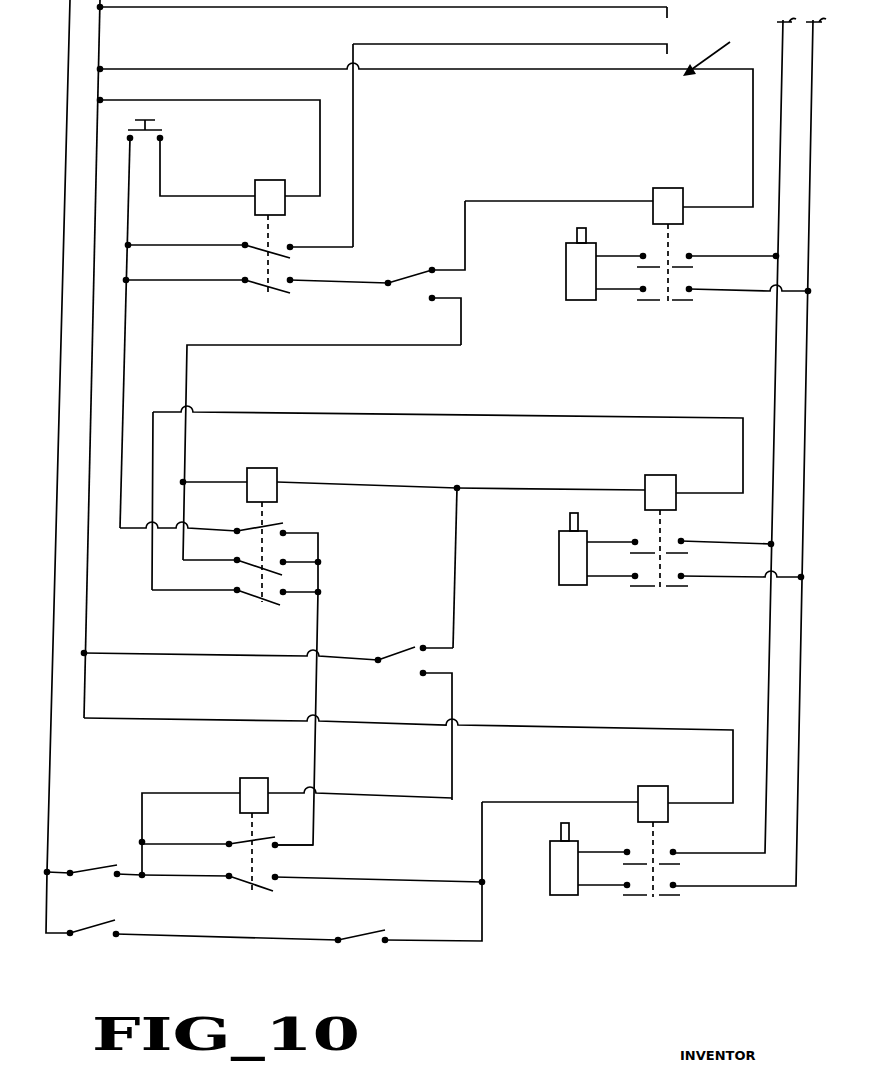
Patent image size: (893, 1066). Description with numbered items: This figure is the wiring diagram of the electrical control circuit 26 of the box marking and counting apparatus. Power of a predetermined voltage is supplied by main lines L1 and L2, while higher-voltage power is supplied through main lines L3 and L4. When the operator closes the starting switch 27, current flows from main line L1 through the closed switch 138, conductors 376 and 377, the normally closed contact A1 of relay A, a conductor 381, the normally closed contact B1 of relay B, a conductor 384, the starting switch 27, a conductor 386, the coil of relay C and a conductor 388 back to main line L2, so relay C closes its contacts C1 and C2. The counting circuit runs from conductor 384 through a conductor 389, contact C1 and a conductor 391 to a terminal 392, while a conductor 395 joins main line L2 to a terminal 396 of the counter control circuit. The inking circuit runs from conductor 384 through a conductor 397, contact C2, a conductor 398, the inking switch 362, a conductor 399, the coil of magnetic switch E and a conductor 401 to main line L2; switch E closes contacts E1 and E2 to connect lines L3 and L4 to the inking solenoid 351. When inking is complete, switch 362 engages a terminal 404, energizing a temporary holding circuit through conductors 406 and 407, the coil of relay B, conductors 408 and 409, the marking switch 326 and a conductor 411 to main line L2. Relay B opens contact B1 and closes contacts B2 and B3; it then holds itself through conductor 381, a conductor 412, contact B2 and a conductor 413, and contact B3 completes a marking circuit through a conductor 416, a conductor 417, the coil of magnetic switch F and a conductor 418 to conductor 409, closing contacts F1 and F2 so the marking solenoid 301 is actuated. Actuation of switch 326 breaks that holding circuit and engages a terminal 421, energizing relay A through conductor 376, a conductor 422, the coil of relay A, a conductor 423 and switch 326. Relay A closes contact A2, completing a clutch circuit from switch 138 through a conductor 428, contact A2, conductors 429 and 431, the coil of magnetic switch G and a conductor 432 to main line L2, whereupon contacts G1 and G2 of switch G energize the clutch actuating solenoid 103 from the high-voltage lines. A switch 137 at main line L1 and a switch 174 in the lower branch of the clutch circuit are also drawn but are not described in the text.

The main line L1 is at (70, 20).
The main line L2 is at (100, 45).
The main line L3 is at (783, 50).
The main line L4 is at (813, 65).
The conductor 395 is at (447, 13).
The terminal 396 is at (668, 16).
The terminal 392 is at (668, 48).
The conductor 391 is at (353, 152).
The electrical control circuit 26 is at (712, 48).
The conductor 401 is at (552, 78).
The conductor 388 is at (262, 103).
The starting switch 27 is at (160, 128).
The conductor 386 is at (218, 180).
The relay C is at (270, 190).
The conductor 384 is at (127, 308).
The conductor 389 is at (200, 238).
The contact of relay C C1 is at (258, 252).
The conductor 397 is at (172, 272).
The contact of relay C C2 is at (268, 296).
The conductor 398 is at (353, 285).
The inking switch 362 is at (400, 275).
The conductor 399 is at (545, 192).
The terminal 404 is at (432, 300).
The conductor 406 is at (375, 348).
The conductor 417 is at (150, 572).
The conductor 407 is at (222, 474).
The relay B is at (262, 478).
The conductor 408 is at (365, 475).
The conductor 418 is at (548, 480).
The magnetic switch F is at (657, 483).
The conductor 409 is at (455, 560).
The conductor 413 is at (213, 519).
The normally closed contact of relay B B1 is at (272, 521).
The contact of relay B B2 is at (250, 565).
The conductor 412 is at (298, 562).
The contact of relay B B3 is at (250, 598).
The conductor 416 is at (298, 592).
The conductor 411 is at (163, 660).
The marking switch 326 is at (400, 652).
The terminal 421 is at (420, 678).
The conductor 432 is at (612, 730).
The conductor 381 is at (316, 758).
The conductor 422 is at (180, 775).
The relay A is at (250, 790).
The conductor 423 is at (405, 799).
The conductor 377 is at (190, 835).
The normally closed contact of relay A A1 is at (255, 838).
The switch 138 is at (92, 865).
The conductor 376 is at (145, 860).
The conductor 428 is at (180, 877).
The contact of relay A A2 is at (258, 893).
The conductor 429 is at (428, 882).
The switch 137 is at (85, 926).
The limit switch 174 is at (368, 942).
The conductor 431 is at (528, 800).
The magnetic switch G is at (648, 793).
The clutch actuating solenoid 103 is at (563, 865).
The contact of magnetic switch G G1 is at (680, 862).
The relay contact G2 is at (680, 896).
The marking solenoid 301 is at (570, 558).
The contact of magnetic switch F F1 is at (683, 553).
The contact of magnetic switch F F2 is at (683, 588).
The inking solenoid 351 is at (573, 270).
The magnetic switch E is at (668, 197).
The contact of magnetic switch E E1 is at (683, 268).
The contact of magnetic switch E E2 is at (683, 301).